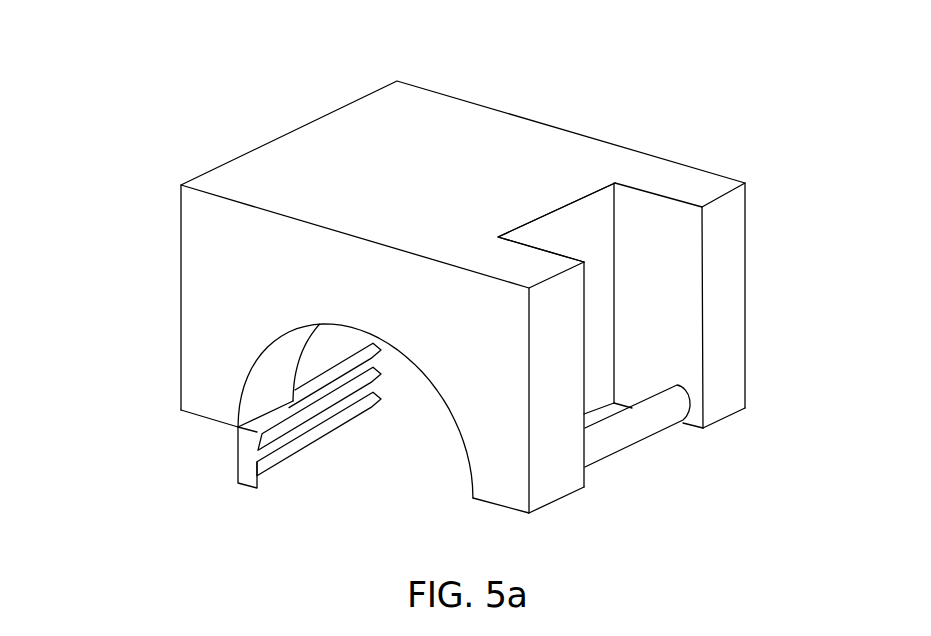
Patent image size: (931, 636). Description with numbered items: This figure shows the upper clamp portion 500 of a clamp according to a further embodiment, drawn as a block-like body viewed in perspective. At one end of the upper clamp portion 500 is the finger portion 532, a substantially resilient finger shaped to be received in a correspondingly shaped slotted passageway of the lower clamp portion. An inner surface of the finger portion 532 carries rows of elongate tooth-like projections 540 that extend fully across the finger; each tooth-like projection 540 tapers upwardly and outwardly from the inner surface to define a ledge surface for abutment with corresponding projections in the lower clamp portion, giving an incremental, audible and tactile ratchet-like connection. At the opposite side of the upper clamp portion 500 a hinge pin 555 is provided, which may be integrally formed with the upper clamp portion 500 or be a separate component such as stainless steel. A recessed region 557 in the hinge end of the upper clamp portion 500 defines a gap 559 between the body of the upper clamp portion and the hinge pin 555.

The upper clamp portion 500 is at (158, 62).
The finger portion 532 is at (213, 459).
The tooth-like projections 540 is at (312, 432).
The hinge pin 555 is at (650, 437).
The recessed region 557 is at (595, 233).
The gap 559 is at (598, 406).